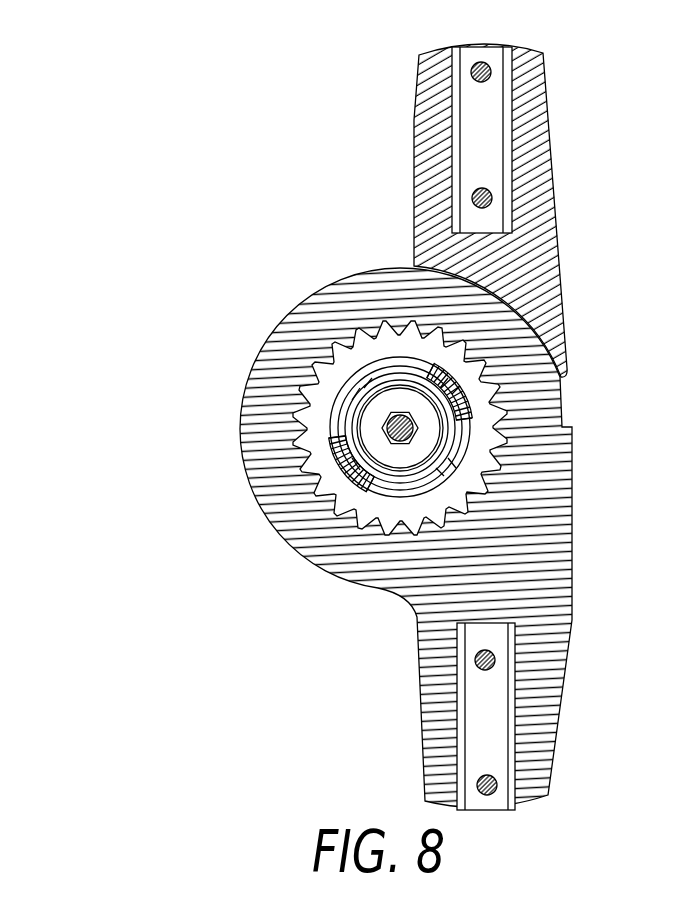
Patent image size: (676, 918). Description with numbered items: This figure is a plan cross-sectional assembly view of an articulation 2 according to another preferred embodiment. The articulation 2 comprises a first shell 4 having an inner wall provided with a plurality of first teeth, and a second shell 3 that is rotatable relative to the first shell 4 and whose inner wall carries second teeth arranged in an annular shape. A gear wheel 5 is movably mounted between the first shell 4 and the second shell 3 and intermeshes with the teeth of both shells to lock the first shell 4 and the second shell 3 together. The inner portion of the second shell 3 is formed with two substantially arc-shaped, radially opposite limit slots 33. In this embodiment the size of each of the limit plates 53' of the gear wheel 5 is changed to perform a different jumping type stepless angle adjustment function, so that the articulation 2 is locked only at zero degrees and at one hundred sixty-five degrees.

The articulation 2 is at (581, 398).
The second shell 3 is at (530, 568).
The first shell 4 is at (538, 290).
The gear wheel 5 is at (470, 487).
The limit slots 33 is at (340, 412).
The limit plates 53' is at (476, 428).